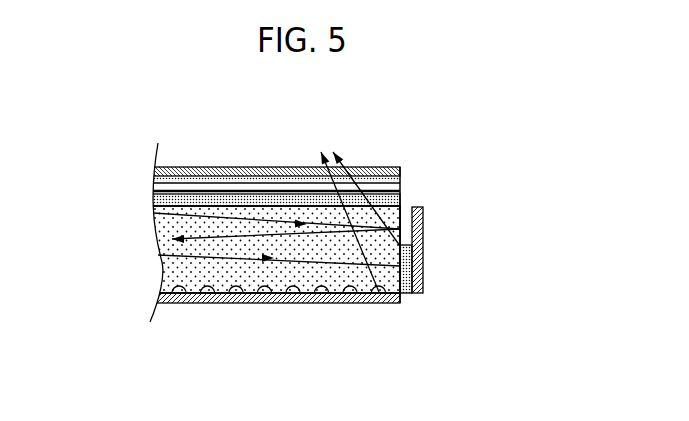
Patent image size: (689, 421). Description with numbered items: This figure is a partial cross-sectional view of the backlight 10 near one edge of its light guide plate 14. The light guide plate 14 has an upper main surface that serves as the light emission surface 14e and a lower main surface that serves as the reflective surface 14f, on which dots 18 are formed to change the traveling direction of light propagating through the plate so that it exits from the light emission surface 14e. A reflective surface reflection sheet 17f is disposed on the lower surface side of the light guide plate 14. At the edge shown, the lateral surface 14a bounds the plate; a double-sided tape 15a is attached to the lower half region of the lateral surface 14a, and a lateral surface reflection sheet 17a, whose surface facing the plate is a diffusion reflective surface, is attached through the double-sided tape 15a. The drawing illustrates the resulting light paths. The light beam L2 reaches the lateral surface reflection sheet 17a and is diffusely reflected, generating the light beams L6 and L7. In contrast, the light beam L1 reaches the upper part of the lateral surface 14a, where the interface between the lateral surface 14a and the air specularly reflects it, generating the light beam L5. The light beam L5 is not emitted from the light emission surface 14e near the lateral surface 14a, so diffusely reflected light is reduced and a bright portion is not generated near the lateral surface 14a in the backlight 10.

The backlight 10 is at (411, 138).
The light guide plate 14 is at (175, 274).
The lateral surface 14a is at (402, 207).
The light emission surface 14e is at (218, 206).
The reflective surface 14f is at (222, 293).
The double-sided tape 15a is at (413, 277).
The lateral surface reflection sheet 17a is at (424, 241).
The reflective surface reflection sheet 17f is at (323, 303).
The dots 18 is at (262, 290).
The light beam L1 is at (150, 216).
The light beam L2 is at (160, 257).
The light beam L5 is at (165, 239).
The light beam L6 is at (338, 158).
The light beam L7 is at (316, 157).